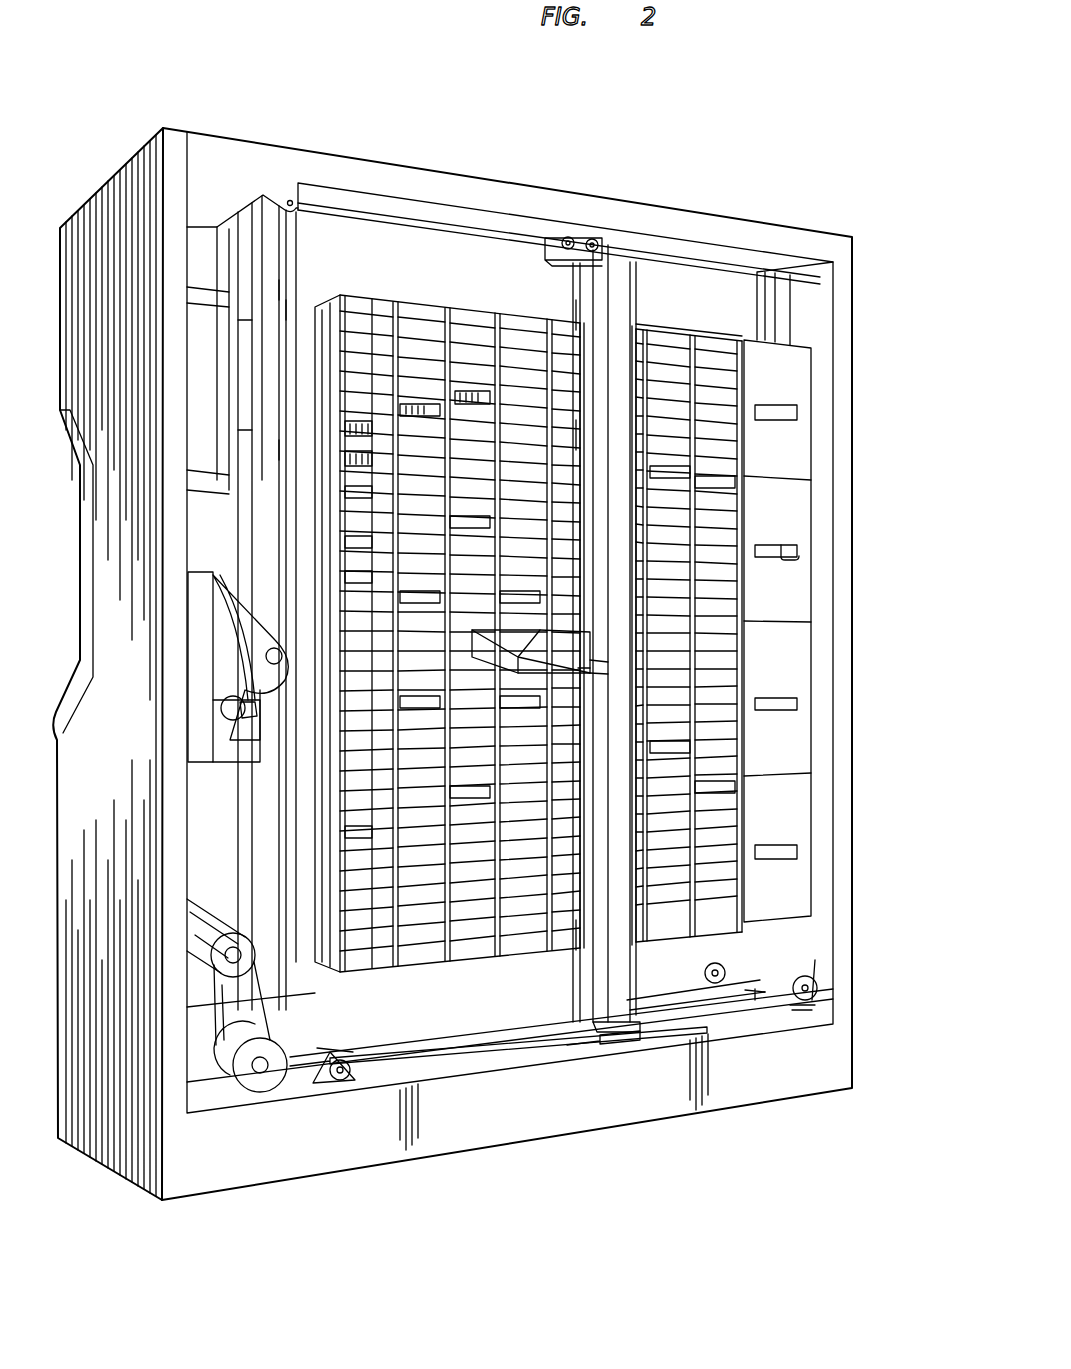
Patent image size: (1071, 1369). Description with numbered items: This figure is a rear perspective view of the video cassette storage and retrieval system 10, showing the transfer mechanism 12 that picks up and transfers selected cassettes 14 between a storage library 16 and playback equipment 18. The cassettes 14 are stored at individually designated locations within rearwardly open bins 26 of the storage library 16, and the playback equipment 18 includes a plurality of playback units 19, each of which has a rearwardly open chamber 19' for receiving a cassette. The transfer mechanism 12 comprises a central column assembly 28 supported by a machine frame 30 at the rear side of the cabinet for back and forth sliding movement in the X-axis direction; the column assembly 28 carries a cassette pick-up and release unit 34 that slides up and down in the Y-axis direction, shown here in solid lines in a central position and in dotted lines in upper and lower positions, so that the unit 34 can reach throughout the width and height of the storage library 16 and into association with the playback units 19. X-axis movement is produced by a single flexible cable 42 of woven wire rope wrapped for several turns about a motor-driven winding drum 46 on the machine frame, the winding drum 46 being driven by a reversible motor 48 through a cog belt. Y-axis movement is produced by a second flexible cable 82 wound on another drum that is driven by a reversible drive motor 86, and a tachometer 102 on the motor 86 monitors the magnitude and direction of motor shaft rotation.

The video cassette storage and retrieval system 10 is at (612, 176).
The flexible cable 82 is at (490, 236).
The storage library 16 is at (698, 330).
The cassettes 14 is at (430, 410).
The transfer mechanism 12 is at (515, 330).
The bins 26 is at (667, 365).
The playback units 19 is at (832, 573).
The playback equipment 18 is at (792, 498).
The rearwardly open chamber 19' is at (836, 716).
The central column assembly 28 is at (625, 620).
The cassette pick-up and release carriage or unit 34 is at (578, 668).
The tachometer 102 is at (232, 706).
The drive motor 86 is at (222, 720).
The machine frame 30 is at (845, 864).
The reversible motor 48 is at (230, 905).
The winding drum 46 is at (258, 1080).
The flexible cable 42 is at (292, 1060).